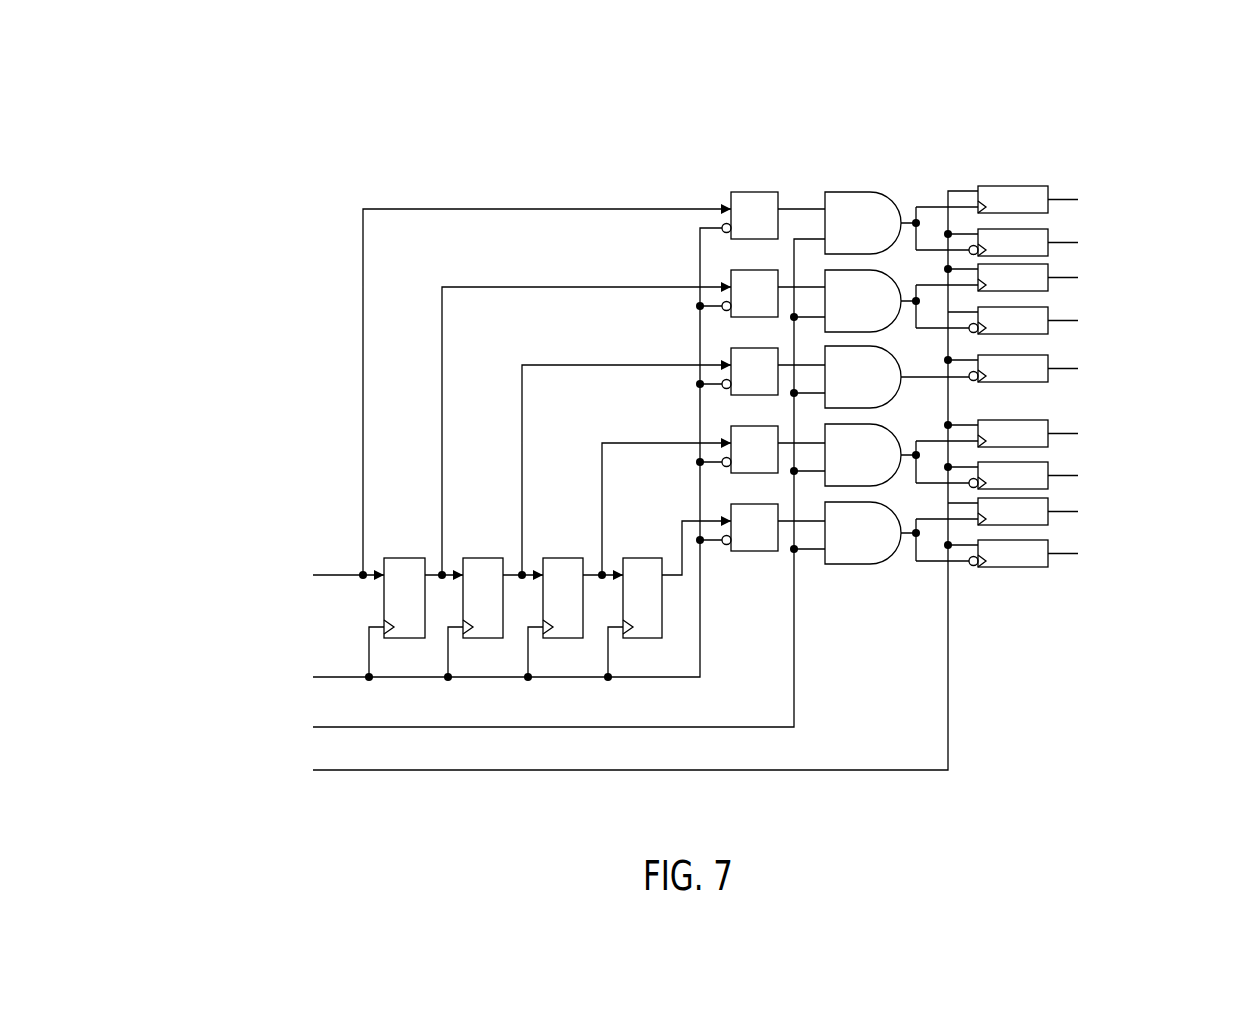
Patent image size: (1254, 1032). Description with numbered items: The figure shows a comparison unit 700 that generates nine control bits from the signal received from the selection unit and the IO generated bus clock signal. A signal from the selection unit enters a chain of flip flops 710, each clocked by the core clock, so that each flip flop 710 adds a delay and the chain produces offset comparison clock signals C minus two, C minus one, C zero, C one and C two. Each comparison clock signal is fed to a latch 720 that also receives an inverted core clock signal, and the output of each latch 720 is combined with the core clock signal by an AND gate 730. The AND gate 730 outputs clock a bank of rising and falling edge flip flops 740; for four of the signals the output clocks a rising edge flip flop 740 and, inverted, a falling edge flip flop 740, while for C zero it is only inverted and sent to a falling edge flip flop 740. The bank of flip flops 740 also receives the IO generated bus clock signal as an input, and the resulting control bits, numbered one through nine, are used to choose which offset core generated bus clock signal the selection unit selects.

The comparison unit 700 is at (480, 138).
The flip flop 710 is at (417, 557).
The latch 720 is at (740, 191).
The AND gate 730 is at (901, 378).
The rising and falling edge flip flop 740 is at (996, 185).